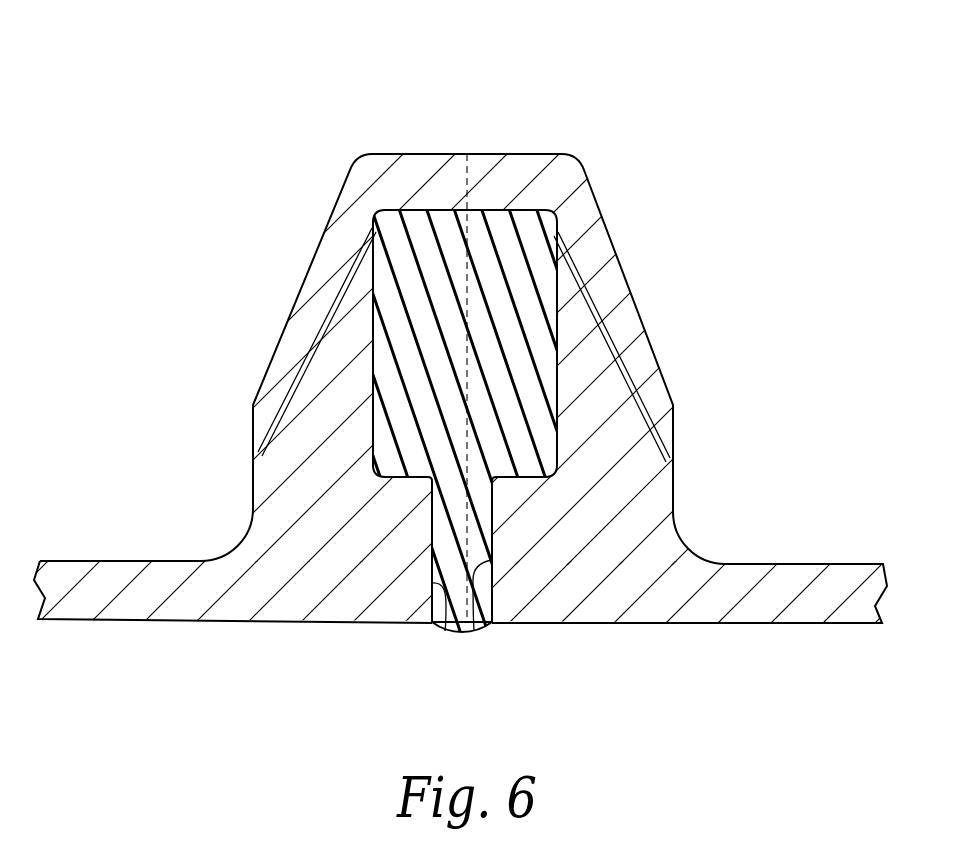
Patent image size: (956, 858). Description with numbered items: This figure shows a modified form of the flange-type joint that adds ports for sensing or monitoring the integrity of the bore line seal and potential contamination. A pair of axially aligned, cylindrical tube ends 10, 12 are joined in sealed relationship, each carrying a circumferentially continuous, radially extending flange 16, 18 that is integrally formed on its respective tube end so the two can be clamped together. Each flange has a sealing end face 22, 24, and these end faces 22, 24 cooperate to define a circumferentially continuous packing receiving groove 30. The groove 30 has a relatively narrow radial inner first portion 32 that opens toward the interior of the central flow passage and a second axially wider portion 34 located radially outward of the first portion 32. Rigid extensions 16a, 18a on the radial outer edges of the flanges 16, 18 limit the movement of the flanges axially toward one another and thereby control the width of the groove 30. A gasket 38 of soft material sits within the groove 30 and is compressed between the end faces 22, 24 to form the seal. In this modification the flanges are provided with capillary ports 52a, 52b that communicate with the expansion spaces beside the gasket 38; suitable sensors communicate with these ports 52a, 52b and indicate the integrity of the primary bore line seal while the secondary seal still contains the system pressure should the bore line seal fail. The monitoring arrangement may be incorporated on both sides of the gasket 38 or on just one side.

The tube end 10 is at (130, 683).
The tube end 12 is at (790, 690).
The flange 16 is at (342, 243).
The rigid extension 16a is at (423, 163).
The flange 18 is at (617, 290).
The rigid extension 18a is at (520, 163).
The end face 22 is at (444, 630).
The end face 24 is at (478, 630).
The packing receiving groove 30 is at (497, 270).
The radial inner first portion 32 is at (471, 648).
The second axially wider portion 34 is at (396, 329).
The gasket 38 is at (425, 215).
The capillary port 52a is at (280, 410).
The capillary port 52b is at (653, 355).